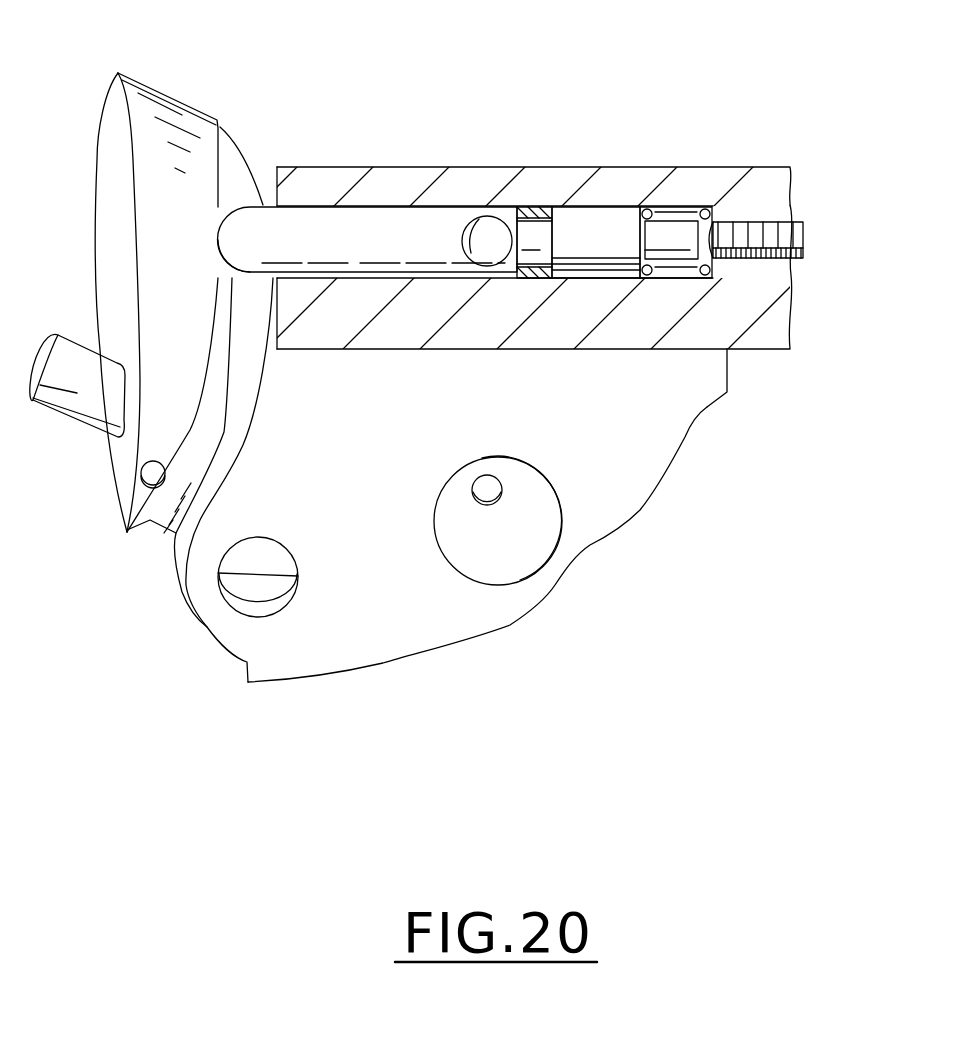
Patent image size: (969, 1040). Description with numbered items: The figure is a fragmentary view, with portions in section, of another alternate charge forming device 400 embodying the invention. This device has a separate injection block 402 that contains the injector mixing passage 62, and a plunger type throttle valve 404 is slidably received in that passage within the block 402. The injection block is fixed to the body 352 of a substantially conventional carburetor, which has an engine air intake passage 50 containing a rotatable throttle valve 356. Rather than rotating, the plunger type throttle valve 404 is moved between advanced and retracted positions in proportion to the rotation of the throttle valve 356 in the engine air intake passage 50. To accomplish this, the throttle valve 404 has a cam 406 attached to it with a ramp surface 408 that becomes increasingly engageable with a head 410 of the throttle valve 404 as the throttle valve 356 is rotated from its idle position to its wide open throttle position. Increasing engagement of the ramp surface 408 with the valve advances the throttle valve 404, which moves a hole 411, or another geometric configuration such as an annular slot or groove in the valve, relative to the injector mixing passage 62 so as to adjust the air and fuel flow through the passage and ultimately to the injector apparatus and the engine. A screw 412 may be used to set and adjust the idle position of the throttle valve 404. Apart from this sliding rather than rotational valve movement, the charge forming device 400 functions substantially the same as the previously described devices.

The charge forming device 400 is at (645, 96).
The injection block 402 is at (745, 150).
The plunger type throttle valve 404 is at (380, 217).
The cam 406 is at (115, 163).
The ramp surface 408 is at (203, 175).
The head 410 is at (237, 250).
The hole 411 is at (476, 215).
The injector mixing passage 62 is at (508, 255).
The screw 412 is at (748, 240).
The body 352 is at (692, 403).
The engine air intake passage 50 is at (517, 585).
The throttle valve 356 is at (453, 528).